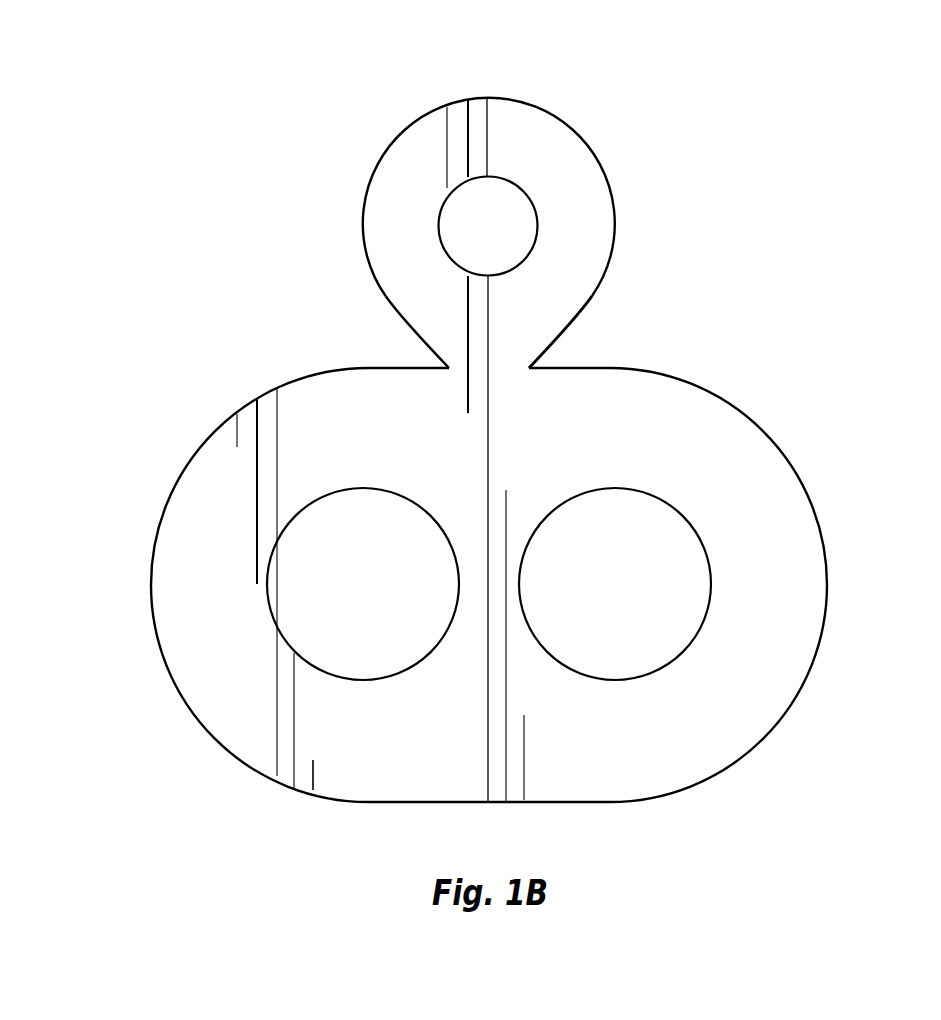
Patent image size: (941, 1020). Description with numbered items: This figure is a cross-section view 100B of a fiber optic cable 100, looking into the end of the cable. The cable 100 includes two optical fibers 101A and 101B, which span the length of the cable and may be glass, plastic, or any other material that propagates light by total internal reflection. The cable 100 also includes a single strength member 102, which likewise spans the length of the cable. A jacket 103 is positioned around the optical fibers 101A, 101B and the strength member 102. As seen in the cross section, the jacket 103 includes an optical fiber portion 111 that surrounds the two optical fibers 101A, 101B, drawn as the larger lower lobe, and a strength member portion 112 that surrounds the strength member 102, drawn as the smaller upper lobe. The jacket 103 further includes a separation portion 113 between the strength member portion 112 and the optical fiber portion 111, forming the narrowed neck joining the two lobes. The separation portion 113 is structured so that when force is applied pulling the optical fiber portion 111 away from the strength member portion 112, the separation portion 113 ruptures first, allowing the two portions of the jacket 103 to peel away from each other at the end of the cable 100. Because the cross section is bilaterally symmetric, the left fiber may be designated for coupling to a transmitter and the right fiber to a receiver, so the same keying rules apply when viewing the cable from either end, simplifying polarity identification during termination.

The cross-section view 100B is at (166, 61).
The fiber optic cable 100 is at (226, 175).
The optical fiber 101A is at (393, 597).
The optical fiber 101B is at (642, 598).
The strength member 102 is at (508, 235).
The jacket 103 is at (549, 164).
The optical fiber portion 111 is at (787, 583).
The strength member portion 112 is at (589, 225).
The separation portion 113 is at (499, 371).